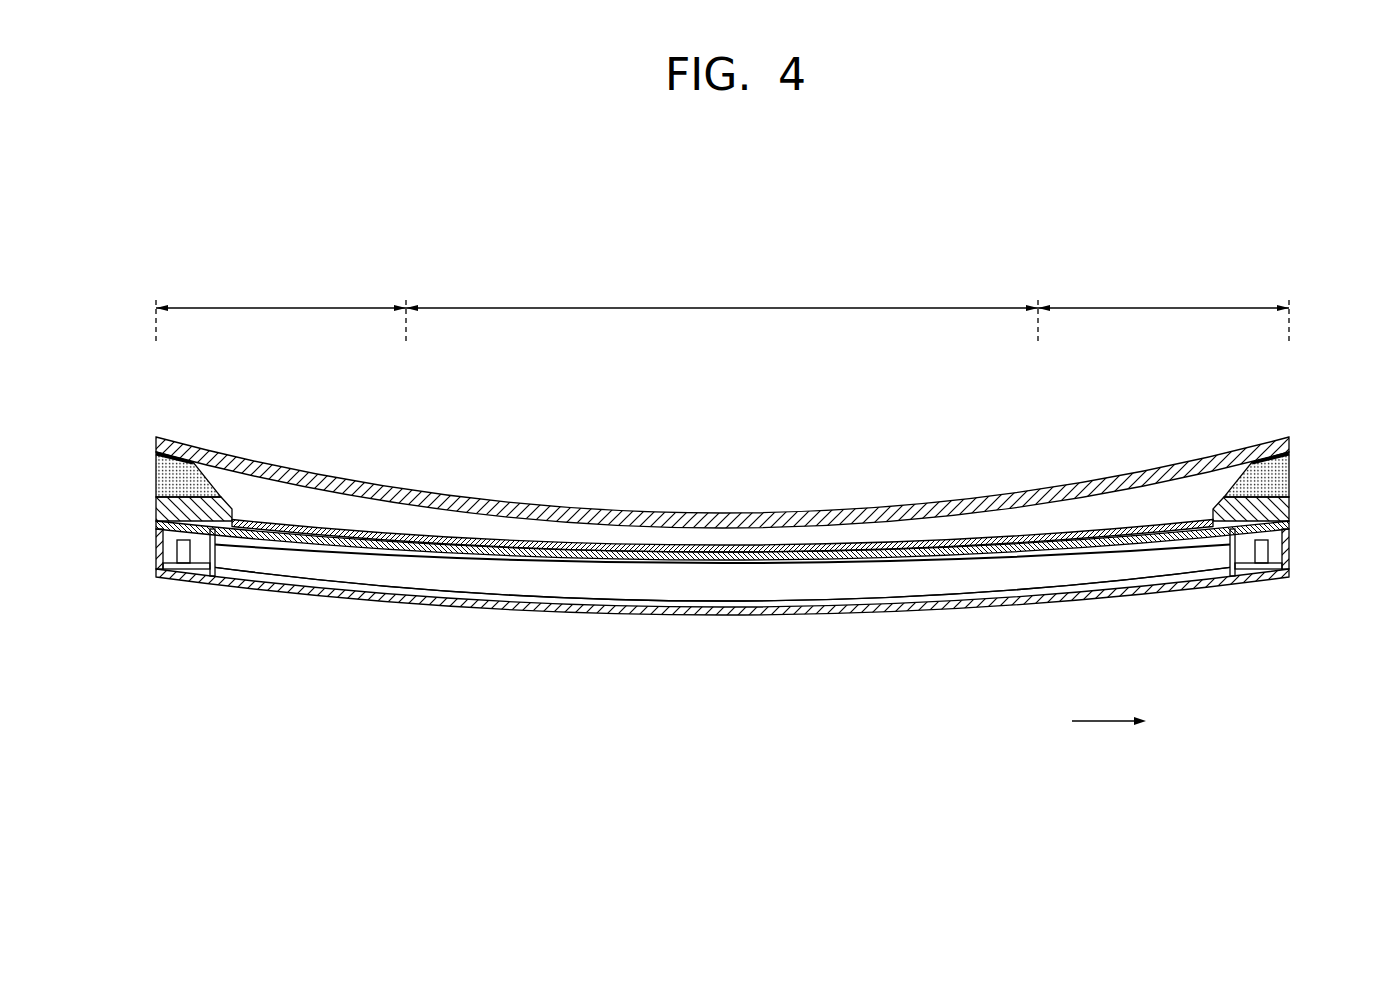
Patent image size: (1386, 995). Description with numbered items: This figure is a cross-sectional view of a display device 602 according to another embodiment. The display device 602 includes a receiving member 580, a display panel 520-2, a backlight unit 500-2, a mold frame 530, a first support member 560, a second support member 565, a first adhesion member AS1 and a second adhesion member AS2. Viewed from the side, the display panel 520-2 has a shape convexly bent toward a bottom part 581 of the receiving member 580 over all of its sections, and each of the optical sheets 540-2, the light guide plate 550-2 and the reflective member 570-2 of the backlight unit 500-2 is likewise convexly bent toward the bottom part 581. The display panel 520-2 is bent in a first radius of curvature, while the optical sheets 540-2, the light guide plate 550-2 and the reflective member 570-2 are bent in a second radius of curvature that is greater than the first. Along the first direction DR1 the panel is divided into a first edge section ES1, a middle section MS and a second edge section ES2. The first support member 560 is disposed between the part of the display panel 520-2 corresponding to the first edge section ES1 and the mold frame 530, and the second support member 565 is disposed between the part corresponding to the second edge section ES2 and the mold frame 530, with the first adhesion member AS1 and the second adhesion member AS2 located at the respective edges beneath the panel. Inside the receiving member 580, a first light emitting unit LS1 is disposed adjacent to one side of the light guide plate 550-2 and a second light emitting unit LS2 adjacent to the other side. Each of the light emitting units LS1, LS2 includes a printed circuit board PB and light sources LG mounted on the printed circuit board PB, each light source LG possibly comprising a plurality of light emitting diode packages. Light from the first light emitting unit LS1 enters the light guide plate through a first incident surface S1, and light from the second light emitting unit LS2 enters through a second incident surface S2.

The display device 602 is at (1256, 218).
The display panel 520-2 is at (1300, 441).
The first adhesion member AS1 is at (157, 453).
The second adhesion member AS2 is at (1289, 455).
The first support member 560 is at (157, 473).
The second support member 565 is at (1289, 477).
The mold frame 530 is at (170, 508).
The optical sheets 540-2 is at (729, 557).
The light guide plate 550-2 is at (797, 585).
The reflective member 570-2 is at (866, 602).
The backlight unit 500-2 is at (895, 680).
The receiving member 580 is at (763, 604).
The bottom part 581 is at (938, 607).
The light sources LG is at (183, 552).
The printed circuit board PB is at (178, 567).
The first incident surface S1 is at (209, 553).
The second incident surface S2 is at (1226, 588).
The first light emitting unit LS1 is at (722, 608).
The second light emitting unit LS2 is at (1264, 608).
The first edge section ES1 is at (281, 311).
The second edge section ES2 is at (1163, 311).
The middle section MS is at (722, 311).
The first direction DR1 is at (1132, 723).